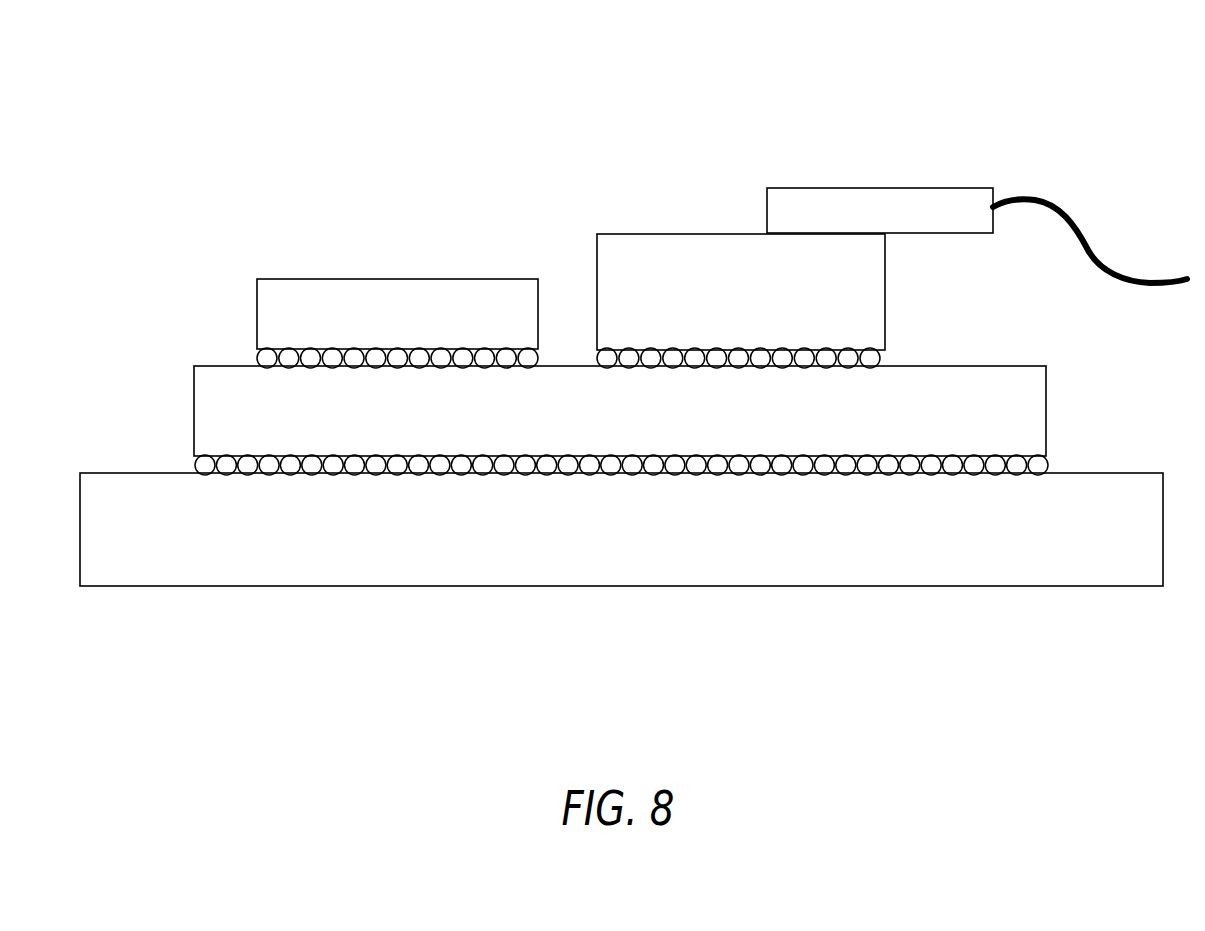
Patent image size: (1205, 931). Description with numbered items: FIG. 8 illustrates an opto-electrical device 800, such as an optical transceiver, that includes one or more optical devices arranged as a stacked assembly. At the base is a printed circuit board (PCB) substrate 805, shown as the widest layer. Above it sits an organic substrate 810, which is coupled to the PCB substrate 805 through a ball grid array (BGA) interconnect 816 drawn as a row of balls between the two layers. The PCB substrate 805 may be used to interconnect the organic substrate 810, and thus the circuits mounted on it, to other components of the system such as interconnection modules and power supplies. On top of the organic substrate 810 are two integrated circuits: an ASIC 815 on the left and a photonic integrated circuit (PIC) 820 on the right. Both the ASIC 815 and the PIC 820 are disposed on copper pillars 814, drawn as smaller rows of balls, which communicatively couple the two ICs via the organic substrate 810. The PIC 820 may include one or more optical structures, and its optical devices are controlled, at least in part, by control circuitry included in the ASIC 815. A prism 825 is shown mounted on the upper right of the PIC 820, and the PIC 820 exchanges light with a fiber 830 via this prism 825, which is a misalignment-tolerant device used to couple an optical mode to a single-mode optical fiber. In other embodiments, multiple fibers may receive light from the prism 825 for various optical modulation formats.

The opto-electrical device 800 is at (268, 112).
The printed circuit board (PCB) substrate 805 is at (621, 529).
The organic substrate 810 is at (620, 411).
The copper pillars 814 is at (250, 357).
The ASIC 815 is at (397, 314).
The ball grid array (BGA) interconnect 816 is at (178, 457).
The photonic integrated circuit (PIC) 820 is at (741, 292).
The prism 825 is at (880, 210).
The fiber 830 is at (1045, 200).